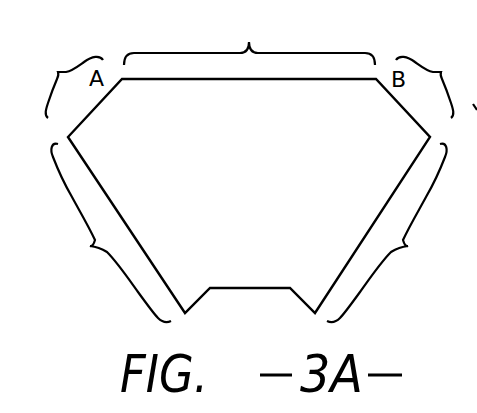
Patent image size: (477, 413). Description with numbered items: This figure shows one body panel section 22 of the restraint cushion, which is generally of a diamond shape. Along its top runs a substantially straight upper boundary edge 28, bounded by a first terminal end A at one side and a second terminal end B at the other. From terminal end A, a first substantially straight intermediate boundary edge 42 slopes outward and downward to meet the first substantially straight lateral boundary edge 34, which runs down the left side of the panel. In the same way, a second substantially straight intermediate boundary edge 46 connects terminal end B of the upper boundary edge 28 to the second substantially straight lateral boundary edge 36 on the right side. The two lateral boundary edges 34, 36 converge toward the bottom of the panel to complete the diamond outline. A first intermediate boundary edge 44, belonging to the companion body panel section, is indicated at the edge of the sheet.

The body panel section 22 is at (269, 192).
The upper boundary edge 28 is at (249, 36).
The first intermediate boundary edge 42 is at (66, 78).
The second intermediate boundary edge 46 is at (428, 78).
The first intermediate boundary edge 44 is at (473, 74).
The first lateral boundary edge 34 is at (111, 233).
The second lateral boundary edge 36 is at (387, 233).